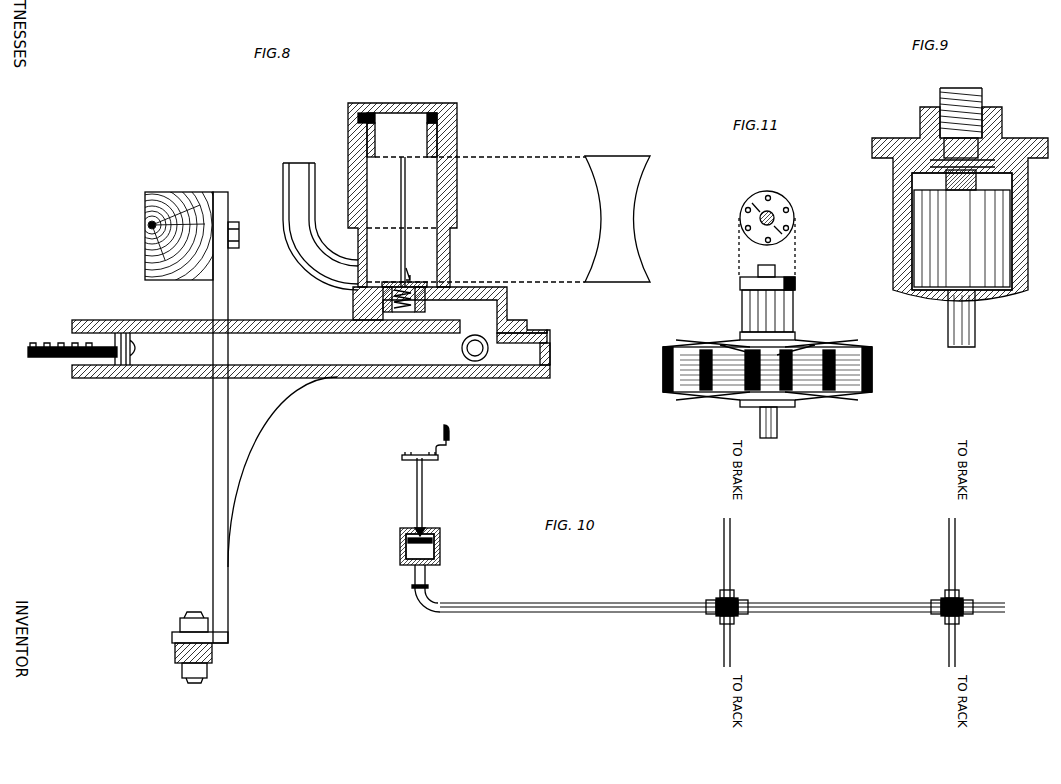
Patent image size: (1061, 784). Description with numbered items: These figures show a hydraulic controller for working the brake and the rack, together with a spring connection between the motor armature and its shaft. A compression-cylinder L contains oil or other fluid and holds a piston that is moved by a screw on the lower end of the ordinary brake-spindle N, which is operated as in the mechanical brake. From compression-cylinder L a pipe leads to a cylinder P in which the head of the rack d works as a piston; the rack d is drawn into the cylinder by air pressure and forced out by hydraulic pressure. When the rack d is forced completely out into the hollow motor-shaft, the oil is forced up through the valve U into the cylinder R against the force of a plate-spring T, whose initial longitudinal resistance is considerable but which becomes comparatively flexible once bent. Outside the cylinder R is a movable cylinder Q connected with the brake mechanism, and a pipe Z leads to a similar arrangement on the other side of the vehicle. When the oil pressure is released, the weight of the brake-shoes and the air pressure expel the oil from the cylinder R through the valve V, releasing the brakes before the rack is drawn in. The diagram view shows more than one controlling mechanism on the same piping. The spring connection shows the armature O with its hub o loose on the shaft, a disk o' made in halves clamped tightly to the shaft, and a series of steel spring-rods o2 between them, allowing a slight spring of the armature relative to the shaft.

In FIG. 8, the movable cylinder Q is at (457, 110).
In FIG. 8, the cylinder R is at (450, 248).
In FIG. 8, the plate-spring T is at (408, 190).
In FIG. 8, the pipe Z is at (283, 165).
In FIG. 8, the valve U is at (386, 282).
In FIG. 8, the valve V is at (420, 305).
In FIG. 8, the cylinder P is at (507, 297).
In FIG. 8, the rack d is at (50, 357).
In FIG. 9, the compression-cylinder L is at (1030, 240).
In FIG. 10, the compression-cylinder L is at (440, 558).
In FIG. 10, the brake-spindle N is at (423, 495).
In FIG. 11, the hub o is at (754, 298).
In FIG. 11, the disk o' is at (781, 272).
In FIG. 11, the steel spring-rods o2 is at (777, 193).
In FIG. 11, the armature O is at (872, 367).
In FIG. 11, the shaft a is at (777, 428).